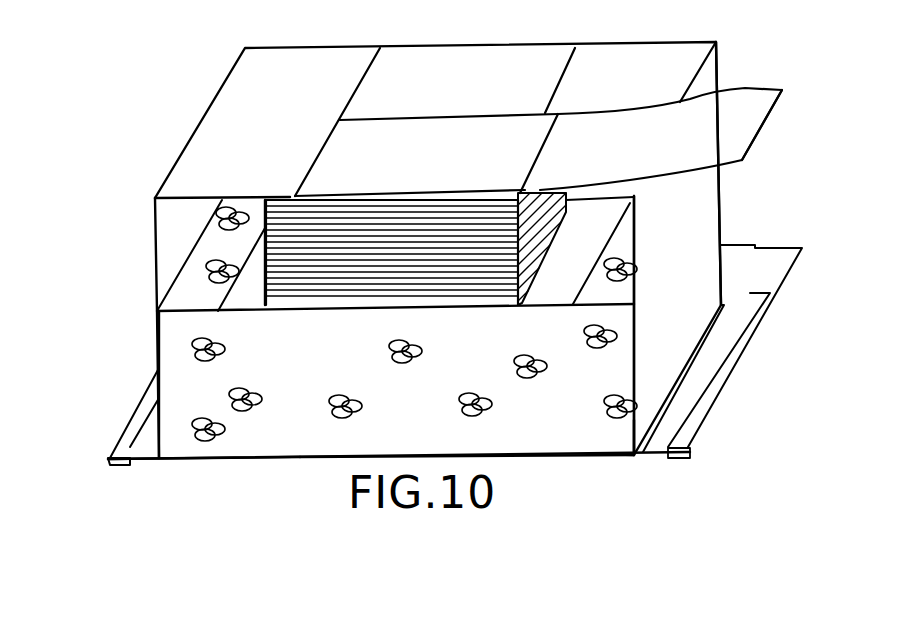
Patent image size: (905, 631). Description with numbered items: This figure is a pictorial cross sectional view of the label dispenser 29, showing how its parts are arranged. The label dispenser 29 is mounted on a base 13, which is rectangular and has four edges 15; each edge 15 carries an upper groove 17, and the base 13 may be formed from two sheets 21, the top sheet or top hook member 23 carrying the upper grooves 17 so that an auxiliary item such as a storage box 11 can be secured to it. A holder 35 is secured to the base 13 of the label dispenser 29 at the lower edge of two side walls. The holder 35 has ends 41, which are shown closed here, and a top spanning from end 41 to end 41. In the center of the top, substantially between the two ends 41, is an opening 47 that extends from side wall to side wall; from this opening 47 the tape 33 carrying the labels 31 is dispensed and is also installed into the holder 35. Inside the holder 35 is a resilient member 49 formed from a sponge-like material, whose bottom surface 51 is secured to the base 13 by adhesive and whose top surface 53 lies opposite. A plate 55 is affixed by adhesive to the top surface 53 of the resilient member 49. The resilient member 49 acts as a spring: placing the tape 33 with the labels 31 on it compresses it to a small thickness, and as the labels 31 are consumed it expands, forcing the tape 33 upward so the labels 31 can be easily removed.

The label dispenser 29 is at (165, 118).
The opening 47 is at (533, 62).
The labels 31 is at (708, 118).
The tape 33 is at (768, 140).
The ends 41 is at (700, 190).
The resilient member 49 is at (622, 243).
The upper groove 17 is at (748, 328).
The holder 35 is at (155, 257).
The top surface 53 is at (200, 297).
The plate 55 is at (425, 249).
The edges 15 is at (108, 455).
The storage box 11 is at (143, 462).
The base 13 is at (237, 462).
The sheets 21 is at (503, 459).
The bottom surface 51 is at (618, 456).
The top hook member 23 is at (692, 447).